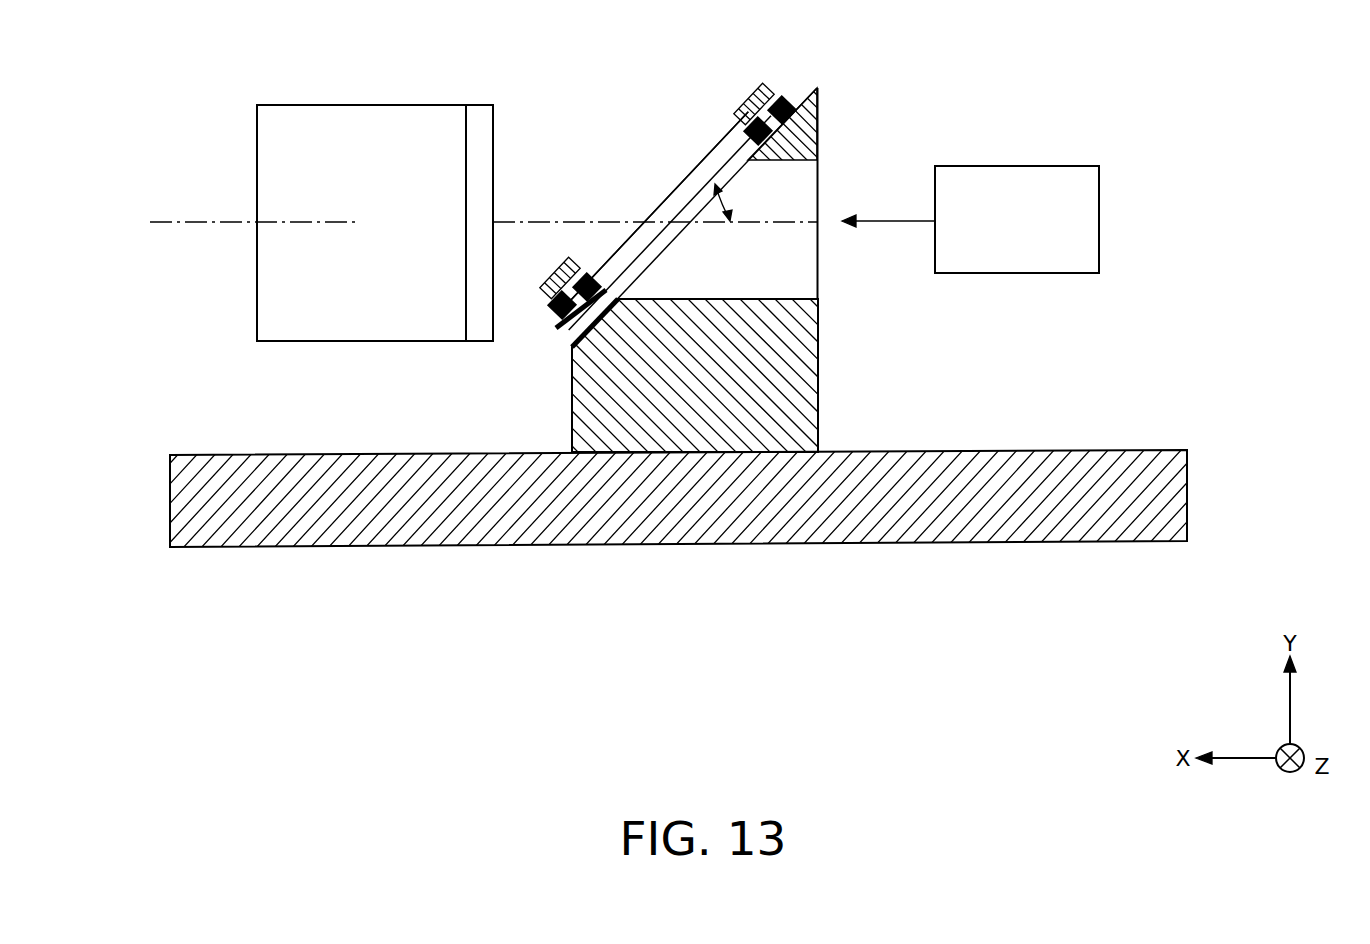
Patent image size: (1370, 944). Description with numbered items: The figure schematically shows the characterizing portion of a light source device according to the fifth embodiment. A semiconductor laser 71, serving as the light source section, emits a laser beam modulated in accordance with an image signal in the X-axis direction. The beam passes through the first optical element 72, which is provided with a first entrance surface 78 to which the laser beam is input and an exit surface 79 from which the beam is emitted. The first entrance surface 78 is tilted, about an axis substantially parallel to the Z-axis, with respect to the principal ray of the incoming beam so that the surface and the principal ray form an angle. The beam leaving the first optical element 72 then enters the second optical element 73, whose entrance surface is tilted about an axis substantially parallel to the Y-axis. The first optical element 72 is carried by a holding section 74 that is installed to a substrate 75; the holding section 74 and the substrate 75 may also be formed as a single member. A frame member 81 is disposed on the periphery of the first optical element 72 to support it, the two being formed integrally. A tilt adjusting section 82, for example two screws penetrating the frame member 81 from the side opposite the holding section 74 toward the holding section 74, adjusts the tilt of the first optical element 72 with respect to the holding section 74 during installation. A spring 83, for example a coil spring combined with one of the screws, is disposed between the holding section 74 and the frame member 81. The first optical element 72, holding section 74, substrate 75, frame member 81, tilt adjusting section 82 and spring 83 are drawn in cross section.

The semiconductor laser 71 is at (1012, 166).
The first optical element 72 is at (718, 141).
The second optical element 73 is at (357, 105).
The holding section 74 is at (821, 350).
The substrate 75 is at (1133, 450).
The first entrance surface 78 is at (648, 249).
The exit surface 79 is at (668, 195).
The frame member 81 is at (796, 96).
The tilt adjusting section 82 is at (750, 86).
The spring 83 is at (566, 335).